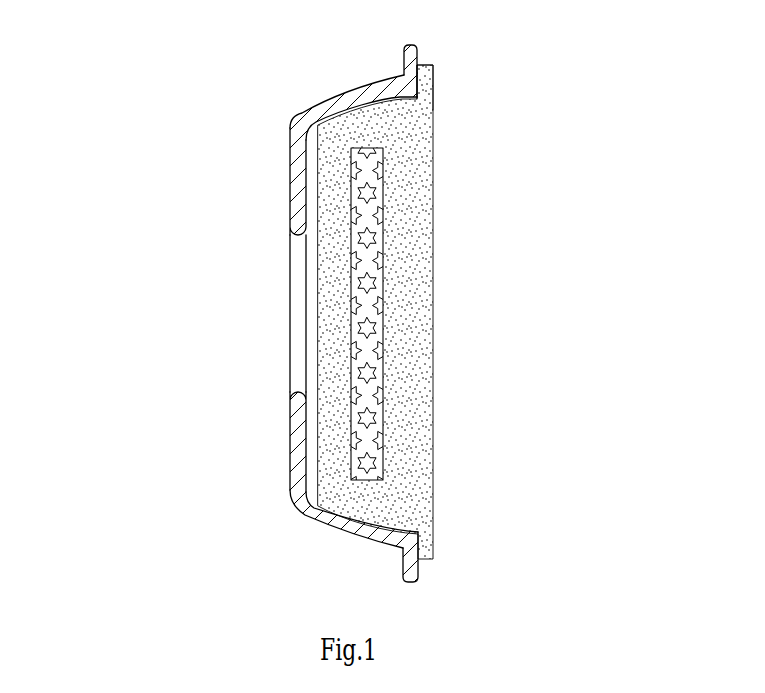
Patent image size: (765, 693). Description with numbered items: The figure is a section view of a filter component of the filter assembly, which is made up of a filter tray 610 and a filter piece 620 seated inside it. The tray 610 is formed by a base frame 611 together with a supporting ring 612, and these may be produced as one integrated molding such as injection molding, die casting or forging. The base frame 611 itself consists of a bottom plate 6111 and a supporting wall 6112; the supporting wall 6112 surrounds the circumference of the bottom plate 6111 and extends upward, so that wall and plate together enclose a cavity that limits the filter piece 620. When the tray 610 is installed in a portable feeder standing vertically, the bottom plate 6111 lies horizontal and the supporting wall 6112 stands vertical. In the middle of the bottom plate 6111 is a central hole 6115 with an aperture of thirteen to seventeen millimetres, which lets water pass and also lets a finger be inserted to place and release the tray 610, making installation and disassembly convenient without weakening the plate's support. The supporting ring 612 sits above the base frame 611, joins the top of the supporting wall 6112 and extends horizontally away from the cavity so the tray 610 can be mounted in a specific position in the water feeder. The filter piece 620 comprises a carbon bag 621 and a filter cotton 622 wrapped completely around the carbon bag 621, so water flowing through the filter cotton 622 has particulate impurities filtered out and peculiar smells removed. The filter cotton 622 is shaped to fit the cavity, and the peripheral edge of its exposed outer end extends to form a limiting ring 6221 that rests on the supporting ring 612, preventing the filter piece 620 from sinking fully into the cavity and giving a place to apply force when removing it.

The filter tray 610 is at (242, 346).
The base frame 611 is at (242, 346).
The bottom plate 6111 is at (290, 175).
The supporting wall 6112 is at (343, 93).
The central hole 6115 is at (292, 319).
The supporting ring 612 is at (404, 50).
The filter piece 620 is at (476, 305).
The carbon bag 621 is at (380, 268).
The filter cotton 622 is at (448, 305).
The limiting ring 6221 is at (433, 73).